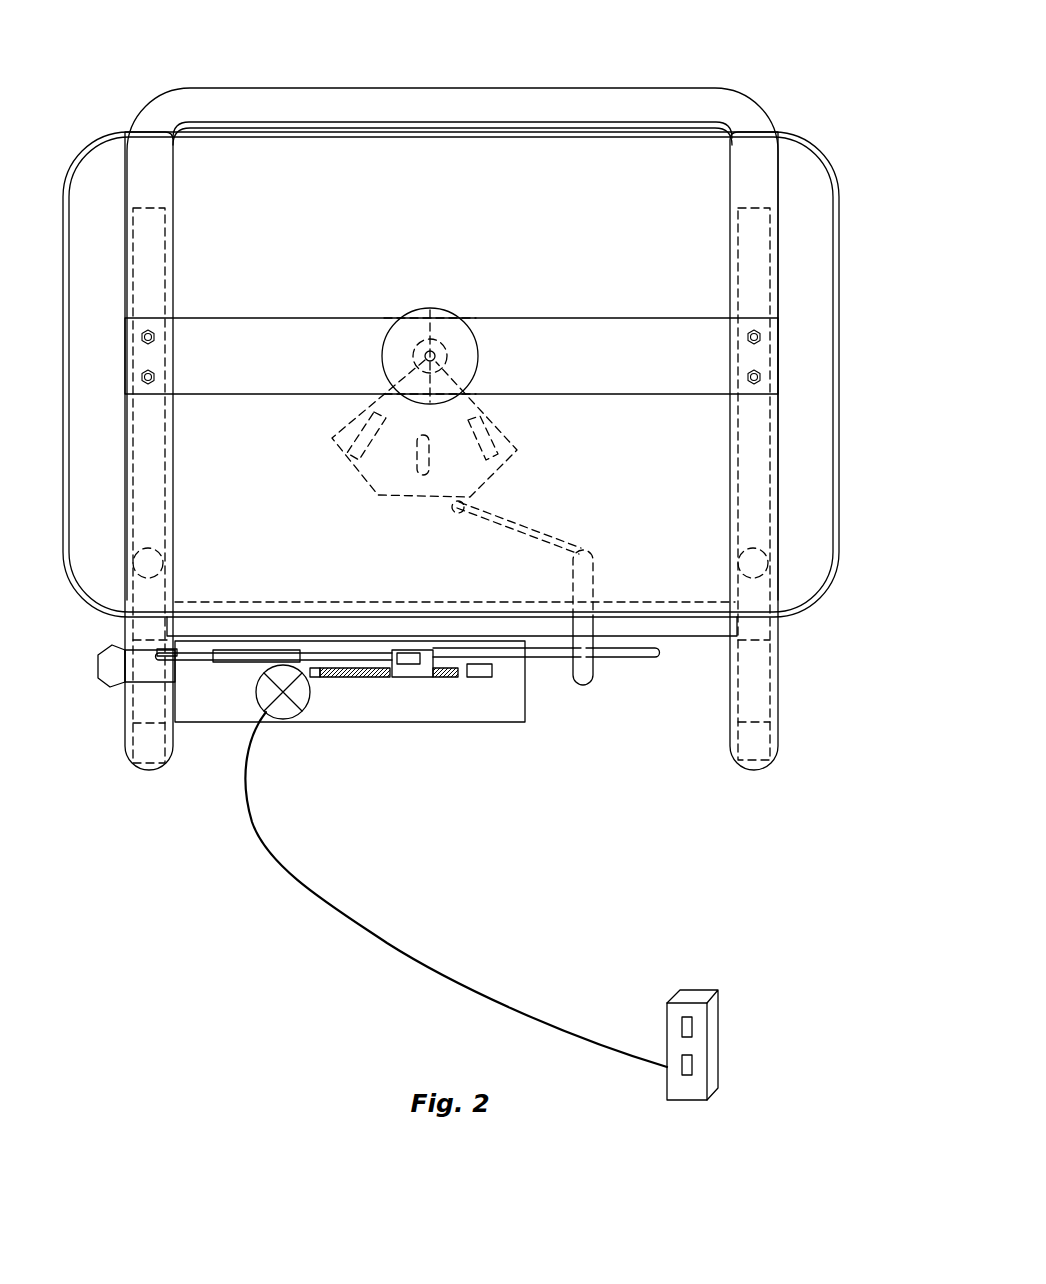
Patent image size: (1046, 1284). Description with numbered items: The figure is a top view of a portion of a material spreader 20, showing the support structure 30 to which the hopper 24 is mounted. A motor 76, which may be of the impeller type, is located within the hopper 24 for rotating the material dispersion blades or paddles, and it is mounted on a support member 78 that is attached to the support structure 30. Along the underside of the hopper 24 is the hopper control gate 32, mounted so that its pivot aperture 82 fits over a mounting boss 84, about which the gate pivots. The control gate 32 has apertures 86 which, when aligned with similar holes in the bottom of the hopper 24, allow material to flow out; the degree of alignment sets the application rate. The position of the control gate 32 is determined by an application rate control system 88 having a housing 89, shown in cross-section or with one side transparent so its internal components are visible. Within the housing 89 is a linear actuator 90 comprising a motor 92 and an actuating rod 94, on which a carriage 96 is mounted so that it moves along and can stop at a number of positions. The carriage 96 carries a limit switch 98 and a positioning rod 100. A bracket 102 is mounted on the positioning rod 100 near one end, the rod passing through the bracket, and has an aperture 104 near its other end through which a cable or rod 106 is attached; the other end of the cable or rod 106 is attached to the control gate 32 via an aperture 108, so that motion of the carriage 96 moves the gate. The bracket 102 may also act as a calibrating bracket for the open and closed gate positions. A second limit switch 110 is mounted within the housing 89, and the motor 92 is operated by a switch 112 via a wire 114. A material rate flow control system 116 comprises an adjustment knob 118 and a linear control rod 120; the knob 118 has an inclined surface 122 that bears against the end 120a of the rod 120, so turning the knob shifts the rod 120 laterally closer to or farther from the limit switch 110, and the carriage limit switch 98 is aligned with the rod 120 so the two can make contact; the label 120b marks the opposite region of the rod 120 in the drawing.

The material spreader 20 is at (400, 33).
The hopper 24 is at (816, 146).
The support structure 30 is at (178, 103).
The hopper control gate 32 is at (355, 477).
The motor 76 is at (443, 325).
The support member 78 is at (618, 330).
The pivot aperture 82 is at (446, 340).
The mounting boss 84 is at (418, 350).
The apertures 86 is at (470, 432).
The application rate control system 88 is at (481, 730).
The housing 89 is at (187, 723).
The linear actuator 90 is at (355, 692).
The motor 92 is at (290, 706).
The actuating rod 94 is at (323, 678).
The carriage 96 is at (407, 678).
The limit switch 98 is at (410, 658).
The positioning rod 100 is at (650, 657).
The bracket 102 is at (580, 654).
The aperture 104 is at (583, 556).
The cable or rod 106 is at (500, 527).
The aperture 108 is at (463, 503).
The second limit switch 110 is at (492, 672).
The switch 112 is at (700, 990).
The wire 114 is at (493, 1000).
The material rate flow control system 116 is at (184, 680).
The adjustment knob 118 is at (98, 684).
The control rod 120 is at (201, 662).
The end of rod 120a is at (155, 652).
The second sensor 120b is at (399, 650).
The inclined surface 122 is at (162, 652).